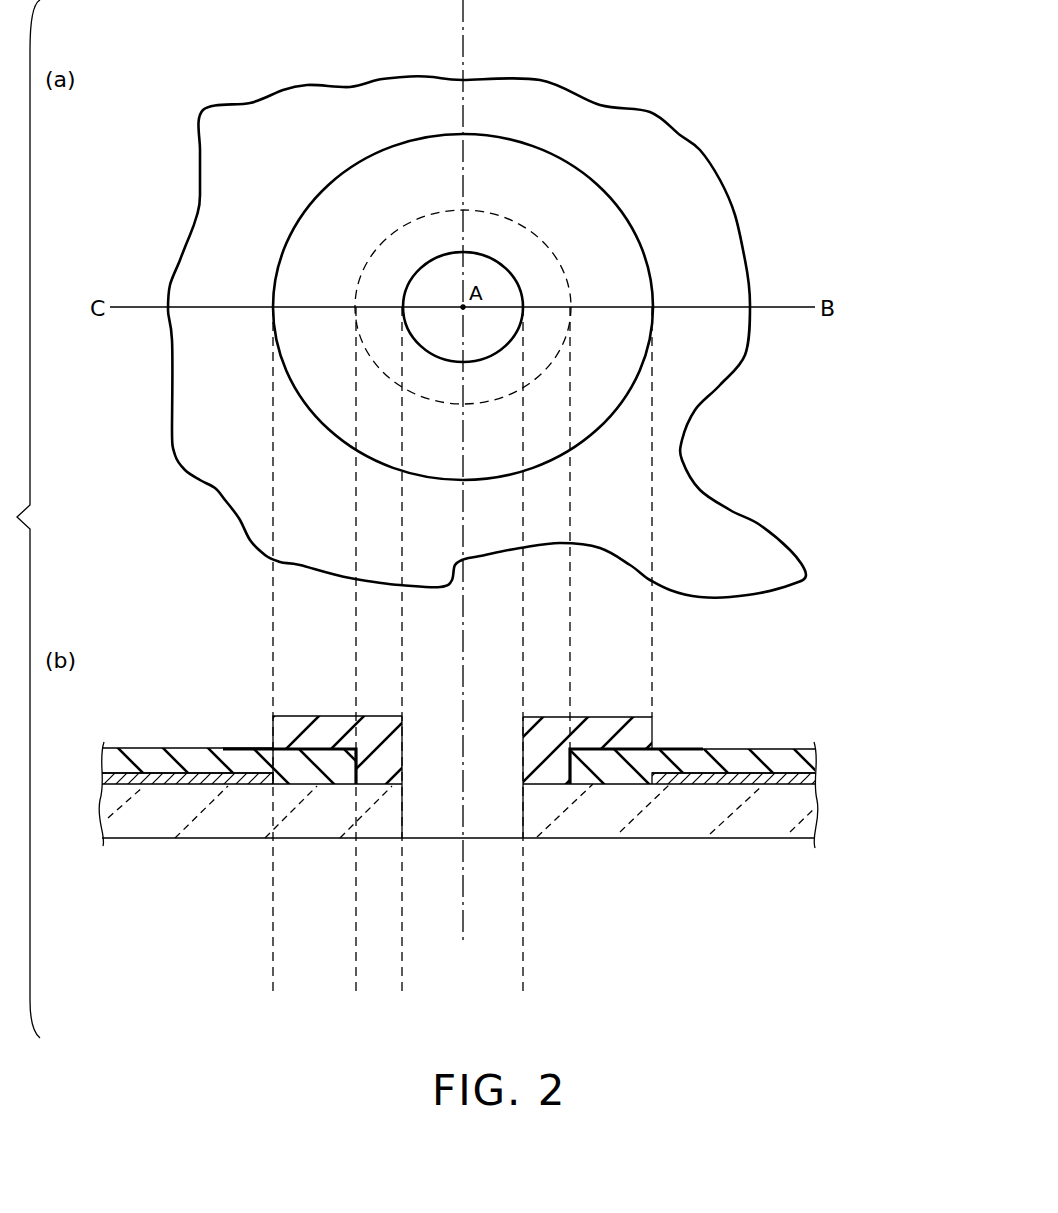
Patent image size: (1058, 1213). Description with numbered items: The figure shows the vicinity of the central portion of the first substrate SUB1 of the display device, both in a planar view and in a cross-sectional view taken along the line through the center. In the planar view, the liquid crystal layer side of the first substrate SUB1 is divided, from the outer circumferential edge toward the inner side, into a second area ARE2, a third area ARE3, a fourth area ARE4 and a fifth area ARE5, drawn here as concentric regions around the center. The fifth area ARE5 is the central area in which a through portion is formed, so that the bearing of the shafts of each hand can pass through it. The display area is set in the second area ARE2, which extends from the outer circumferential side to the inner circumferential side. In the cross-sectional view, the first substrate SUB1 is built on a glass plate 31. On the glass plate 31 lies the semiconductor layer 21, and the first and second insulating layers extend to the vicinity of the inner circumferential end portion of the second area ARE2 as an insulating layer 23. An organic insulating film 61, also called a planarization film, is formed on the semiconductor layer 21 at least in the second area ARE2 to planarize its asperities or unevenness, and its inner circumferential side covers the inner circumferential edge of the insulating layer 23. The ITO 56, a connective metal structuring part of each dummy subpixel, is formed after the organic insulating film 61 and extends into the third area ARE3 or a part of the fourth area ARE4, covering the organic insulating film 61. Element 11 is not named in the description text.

The electrode 11 is at (418, 267).
The semiconductor layer 21 is at (202, 776).
The insulating layer 23 is at (238, 779).
The glass plate 31 is at (597, 822).
The ITO (connective metal) 56 is at (681, 747).
The organic insulating film 61 is at (217, 193).
The first substrate SUB1 is at (832, 817).
The second area ARE2 is at (463, 133).
The third area ARE3 is at (533, 228).
The fourth area ARE4 is at (521, 286).
The fifth area ARE5 is at (497, 320).